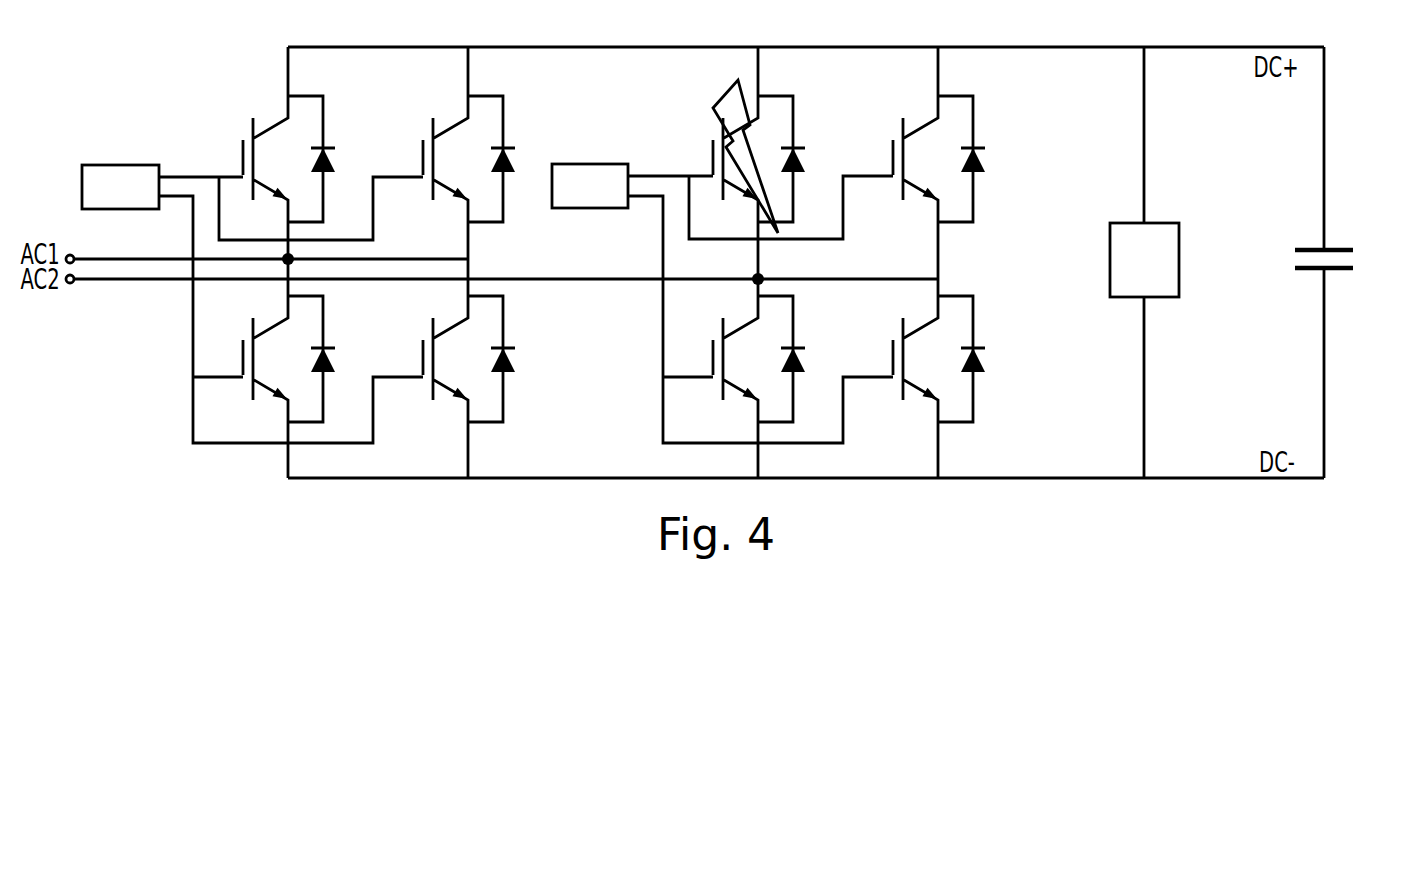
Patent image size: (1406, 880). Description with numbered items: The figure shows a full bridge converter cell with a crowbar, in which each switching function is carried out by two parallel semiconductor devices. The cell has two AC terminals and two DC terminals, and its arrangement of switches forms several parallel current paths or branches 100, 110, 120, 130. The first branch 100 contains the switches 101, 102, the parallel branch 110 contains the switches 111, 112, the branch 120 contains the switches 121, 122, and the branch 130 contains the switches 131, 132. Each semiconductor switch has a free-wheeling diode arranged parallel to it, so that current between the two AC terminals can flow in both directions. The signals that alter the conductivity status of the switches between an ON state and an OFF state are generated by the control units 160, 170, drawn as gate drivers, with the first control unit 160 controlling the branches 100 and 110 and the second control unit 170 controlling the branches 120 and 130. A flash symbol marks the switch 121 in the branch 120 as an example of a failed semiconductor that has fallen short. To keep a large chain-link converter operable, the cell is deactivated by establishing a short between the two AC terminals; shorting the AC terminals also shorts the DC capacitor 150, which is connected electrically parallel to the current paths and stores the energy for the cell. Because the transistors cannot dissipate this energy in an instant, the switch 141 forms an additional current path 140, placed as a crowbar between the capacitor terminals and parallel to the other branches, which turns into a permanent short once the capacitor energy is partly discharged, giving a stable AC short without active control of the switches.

The current path 100 is at (305, 241).
The switch 101 is at (305, 156).
The switch 102 is at (304, 359).
The current path 110 is at (485, 241).
The switch 111 is at (485, 152).
The switch 112 is at (485, 359).
The current path 120 is at (774, 241).
The switch 121 is at (774, 156).
The switch 122 is at (774, 359).
The current path 130 is at (954, 241).
The switch 131 is at (953, 157).
The switch 132 is at (954, 359).
The current path 140 is at (1163, 241).
The switch 141 is at (1163, 247).
The capacitor 150 is at (1340, 262).
The control unit 160 is at (252, 284).
The control unit 170 is at (722, 285).